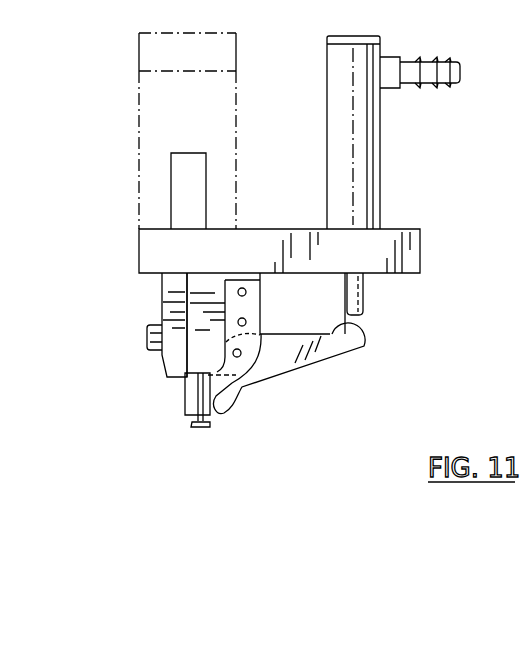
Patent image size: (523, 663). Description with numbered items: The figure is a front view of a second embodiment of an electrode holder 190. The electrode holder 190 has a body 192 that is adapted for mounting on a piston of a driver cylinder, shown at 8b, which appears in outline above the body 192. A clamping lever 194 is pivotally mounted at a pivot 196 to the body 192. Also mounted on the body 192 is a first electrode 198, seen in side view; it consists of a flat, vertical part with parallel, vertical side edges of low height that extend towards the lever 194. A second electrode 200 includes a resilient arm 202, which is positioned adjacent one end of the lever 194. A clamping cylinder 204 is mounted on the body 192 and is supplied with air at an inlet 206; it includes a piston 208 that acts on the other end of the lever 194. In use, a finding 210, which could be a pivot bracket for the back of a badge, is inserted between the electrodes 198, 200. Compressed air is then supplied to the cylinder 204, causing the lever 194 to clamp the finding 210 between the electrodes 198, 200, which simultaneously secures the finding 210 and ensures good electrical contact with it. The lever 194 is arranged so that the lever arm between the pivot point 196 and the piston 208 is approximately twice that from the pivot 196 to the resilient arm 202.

The piston of a driver cylinder 8b is at (153, 127).
The electrode holder 190 is at (146, 307).
The body 192 is at (155, 248).
The clamping lever 194 is at (327, 343).
The pivot 196 is at (241, 357).
The first electrode 198 is at (185, 400).
The second electrode 200 is at (249, 297).
The resilient arm 202 is at (207, 418).
The clamping cylinder 204 is at (367, 148).
The inlet 206 is at (445, 58).
The piston 208 is at (361, 293).
The finding 210 is at (192, 425).